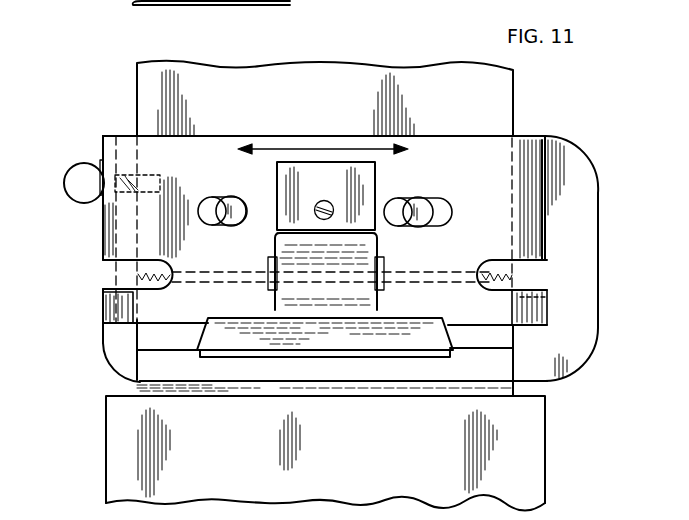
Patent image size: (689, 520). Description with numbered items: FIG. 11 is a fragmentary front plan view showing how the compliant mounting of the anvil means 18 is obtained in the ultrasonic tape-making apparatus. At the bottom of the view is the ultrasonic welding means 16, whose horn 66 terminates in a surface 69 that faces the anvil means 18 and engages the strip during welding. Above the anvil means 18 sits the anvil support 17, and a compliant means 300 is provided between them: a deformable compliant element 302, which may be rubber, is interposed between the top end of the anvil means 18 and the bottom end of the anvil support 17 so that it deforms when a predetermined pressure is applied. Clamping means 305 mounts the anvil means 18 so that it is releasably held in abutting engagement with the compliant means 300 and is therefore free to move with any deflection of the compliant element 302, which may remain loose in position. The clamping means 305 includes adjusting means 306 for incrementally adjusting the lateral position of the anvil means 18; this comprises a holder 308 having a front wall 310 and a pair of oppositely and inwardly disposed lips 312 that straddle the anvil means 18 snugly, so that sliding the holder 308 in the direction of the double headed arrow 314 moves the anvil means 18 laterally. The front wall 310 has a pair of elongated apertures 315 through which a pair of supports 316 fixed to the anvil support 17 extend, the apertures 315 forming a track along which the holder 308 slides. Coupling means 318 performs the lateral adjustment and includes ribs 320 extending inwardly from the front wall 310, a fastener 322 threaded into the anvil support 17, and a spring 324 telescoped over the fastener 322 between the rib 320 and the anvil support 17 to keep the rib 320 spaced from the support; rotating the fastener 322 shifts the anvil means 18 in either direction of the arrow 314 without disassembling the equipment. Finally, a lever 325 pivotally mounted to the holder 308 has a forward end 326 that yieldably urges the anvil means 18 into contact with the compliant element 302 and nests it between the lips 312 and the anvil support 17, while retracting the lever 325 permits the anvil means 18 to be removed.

The ultrasonic welding means 16 is at (547, 458).
The anvil support 17 is at (525, 102).
The anvil means 18 is at (135, 388).
The ultrasonic horn 66 is at (106, 443).
The surface 69 is at (538, 387).
The compliant means 300 is at (135, 277).
The compliant element 302 is at (515, 276).
The clamping means 305 is at (281, 358).
The adjusting means 306 is at (550, 139).
The holder 308 is at (102, 316).
The front wall 310 is at (450, 257).
The lips 312 is at (103, 307).
The double headed arrow 314 is at (322, 149).
The elongated apertures 315 is at (208, 198).
The supports 316 is at (230, 224).
The coupling means 318 is at (64, 187).
The ribs 320 is at (103, 150).
The fastener 322 is at (80, 196).
The spring 324 is at (127, 135).
The lever 325 is at (330, 328).
The forward end 326 is at (432, 360).